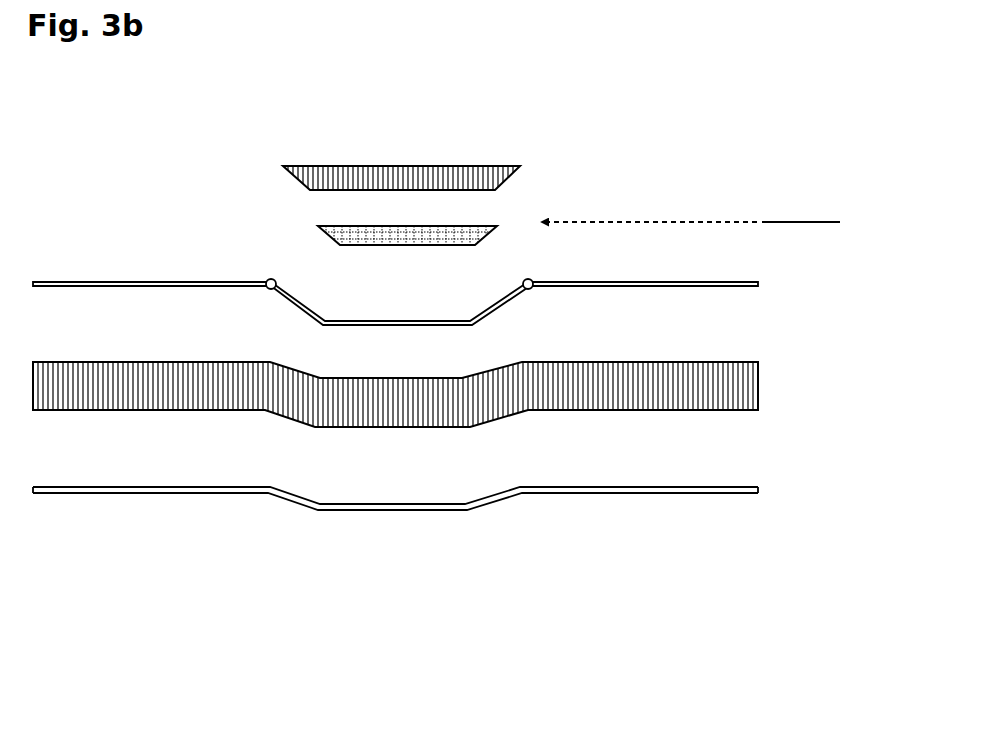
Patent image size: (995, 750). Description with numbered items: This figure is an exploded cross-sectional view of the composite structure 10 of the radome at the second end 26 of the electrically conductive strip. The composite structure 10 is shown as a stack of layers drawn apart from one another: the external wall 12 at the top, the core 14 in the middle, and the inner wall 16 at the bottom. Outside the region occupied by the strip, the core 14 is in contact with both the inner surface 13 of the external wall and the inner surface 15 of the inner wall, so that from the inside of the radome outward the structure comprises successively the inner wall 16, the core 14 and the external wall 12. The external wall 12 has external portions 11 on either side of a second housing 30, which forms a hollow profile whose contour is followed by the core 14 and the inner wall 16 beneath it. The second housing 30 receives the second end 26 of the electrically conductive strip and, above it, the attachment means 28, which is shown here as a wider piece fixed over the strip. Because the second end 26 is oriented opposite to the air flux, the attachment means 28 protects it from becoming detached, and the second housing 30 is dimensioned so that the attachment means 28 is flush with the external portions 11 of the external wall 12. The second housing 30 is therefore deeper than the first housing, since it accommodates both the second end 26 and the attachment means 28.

The composite structure 10 is at (144, 207).
The external portions of the external wall 11 is at (678, 278).
The external wall 12 is at (461, 288).
The inner surface of the external wall 13 is at (86, 291).
The core 14 is at (775, 389).
The inner surface of the inner wall 15 is at (684, 483).
The inner wall 16 is at (464, 479).
The second end of the electrically conductive strip 26 is at (828, 222).
The attachment means 28 is at (488, 163).
The second housing 30 is at (502, 287).